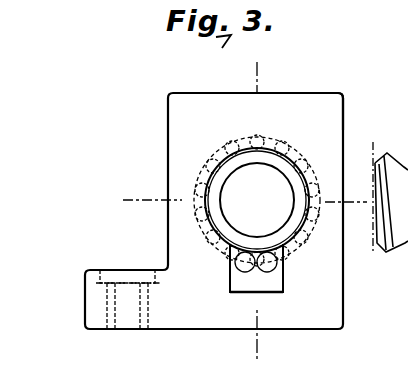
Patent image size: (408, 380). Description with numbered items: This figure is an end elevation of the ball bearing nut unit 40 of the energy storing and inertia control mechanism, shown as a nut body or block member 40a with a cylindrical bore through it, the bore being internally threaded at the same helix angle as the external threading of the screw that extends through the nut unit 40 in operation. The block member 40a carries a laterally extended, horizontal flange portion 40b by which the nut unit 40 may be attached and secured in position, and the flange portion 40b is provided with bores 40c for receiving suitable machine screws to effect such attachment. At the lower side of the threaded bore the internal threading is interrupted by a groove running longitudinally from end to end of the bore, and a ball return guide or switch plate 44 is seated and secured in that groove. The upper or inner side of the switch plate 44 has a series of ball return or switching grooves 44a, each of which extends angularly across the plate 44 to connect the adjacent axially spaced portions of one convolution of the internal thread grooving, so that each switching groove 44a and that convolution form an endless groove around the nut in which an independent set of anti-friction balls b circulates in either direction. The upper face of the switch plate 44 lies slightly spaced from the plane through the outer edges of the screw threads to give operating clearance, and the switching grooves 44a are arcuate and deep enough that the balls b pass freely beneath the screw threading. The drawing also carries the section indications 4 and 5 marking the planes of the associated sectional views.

The ball bearing nut unit 40 is at (168, 122).
The nut body or block member 40a is at (318, 105).
The horizontal flange portion 40b is at (104, 299).
The bores 40c is at (127, 310).
The anti-friction balls b is at (233, 150).
The ball return guide or switch plate 44 is at (270, 282).
The ball return or switching grooves 44a is at (233, 283).
The section line 4- 4 is at (250, 345).
The section line 5- 5 is at (358, 220).